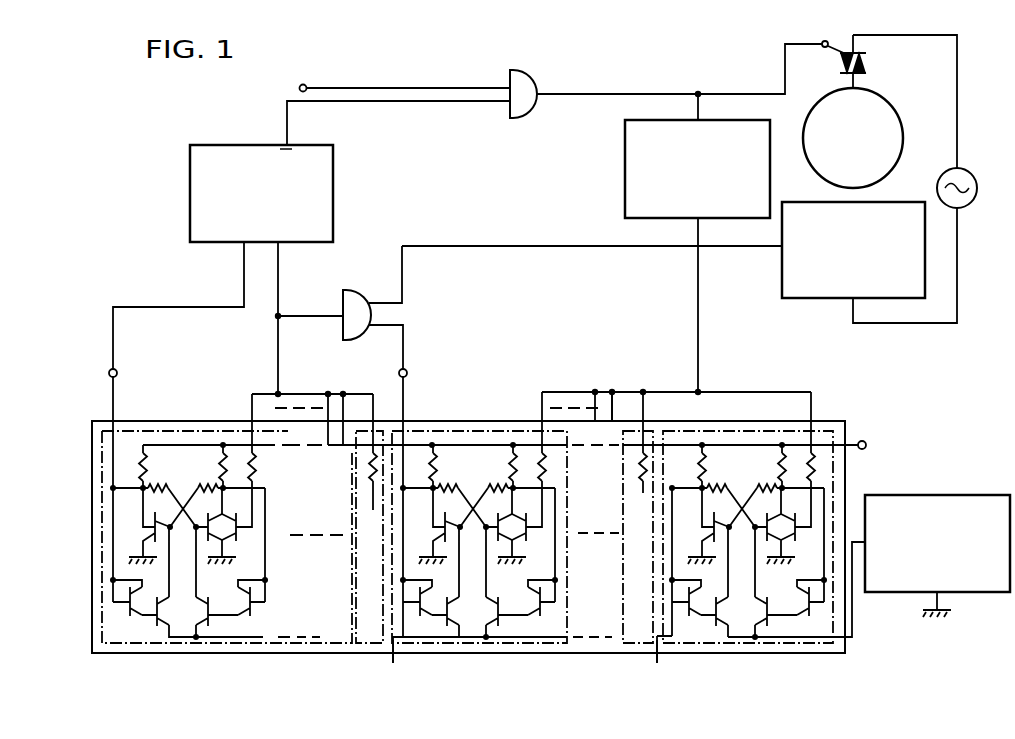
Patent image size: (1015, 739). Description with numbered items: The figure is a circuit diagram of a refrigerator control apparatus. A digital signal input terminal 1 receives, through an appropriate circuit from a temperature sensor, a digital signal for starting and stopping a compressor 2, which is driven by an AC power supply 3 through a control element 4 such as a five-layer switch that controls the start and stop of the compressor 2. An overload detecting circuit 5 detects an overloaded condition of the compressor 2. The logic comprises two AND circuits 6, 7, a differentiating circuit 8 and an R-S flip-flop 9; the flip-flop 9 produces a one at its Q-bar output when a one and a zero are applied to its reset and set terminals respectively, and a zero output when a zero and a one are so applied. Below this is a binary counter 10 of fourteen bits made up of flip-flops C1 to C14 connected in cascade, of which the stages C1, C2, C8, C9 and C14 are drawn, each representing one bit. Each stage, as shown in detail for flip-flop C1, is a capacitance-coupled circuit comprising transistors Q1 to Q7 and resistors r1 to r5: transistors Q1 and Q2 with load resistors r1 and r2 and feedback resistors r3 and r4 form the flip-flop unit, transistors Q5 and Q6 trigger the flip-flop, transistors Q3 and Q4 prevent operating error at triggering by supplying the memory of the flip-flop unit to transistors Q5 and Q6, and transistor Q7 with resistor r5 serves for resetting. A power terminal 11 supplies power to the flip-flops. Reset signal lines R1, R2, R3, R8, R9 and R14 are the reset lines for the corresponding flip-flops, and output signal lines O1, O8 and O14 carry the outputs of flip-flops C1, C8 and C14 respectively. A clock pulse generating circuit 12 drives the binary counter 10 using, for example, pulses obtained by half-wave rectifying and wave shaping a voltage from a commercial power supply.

The digital signal input terminal 1 is at (303, 84).
The compressor 2 is at (903, 128).
The AC power supply 3 is at (977, 190).
The control element 4 is at (866, 64).
The overload detecting circuit 5 is at (925, 262).
The AND circuit 6 is at (532, 78).
The AND circuit 7 is at (348, 293).
The differentiating circuit 8 is at (625, 174).
The R-S flip-flop 9 is at (333, 190).
The binary counter 10 is at (880, 651).
The power terminal 11 is at (873, 430).
The clock pulse generating circuit 12 is at (945, 495).
The reset signal line R14 is at (250, 395).
The reset signal line R9 is at (373, 394).
The reset signal line R8 is at (541, 393).
The reset signal line R3 is at (612, 392).
The reset signal line R2 is at (643, 392).
The reset signal line R1 is at (811, 392).
The output signal line O14 is at (102, 466).
The output signal line O8 is at (397, 663).
The output signal line O1 is at (661, 663).
The flip-flop C14 is at (120, 640).
The flip-flop C9 is at (362, 642).
The flip-flop C8 is at (450, 640).
The flip-flop C2 is at (626, 642).
The flip-flop C1 is at (690, 640).
The load resistor r1 is at (704, 468).
The load resistor r2 is at (776, 466).
The feedback resistor r3 is at (715, 488).
The feedback resistor r4 is at (768, 489).
The resistor r5 is at (811, 468).
The transistor Q1 is at (712, 527).
The transistor Q2 is at (775, 535).
The transistor Q3 is at (691, 594).
The transistor Q4 is at (800, 590).
The transistor Q5 is at (720, 608).
The transistor Q6 is at (764, 618).
The transistor Q7 is at (796, 534).